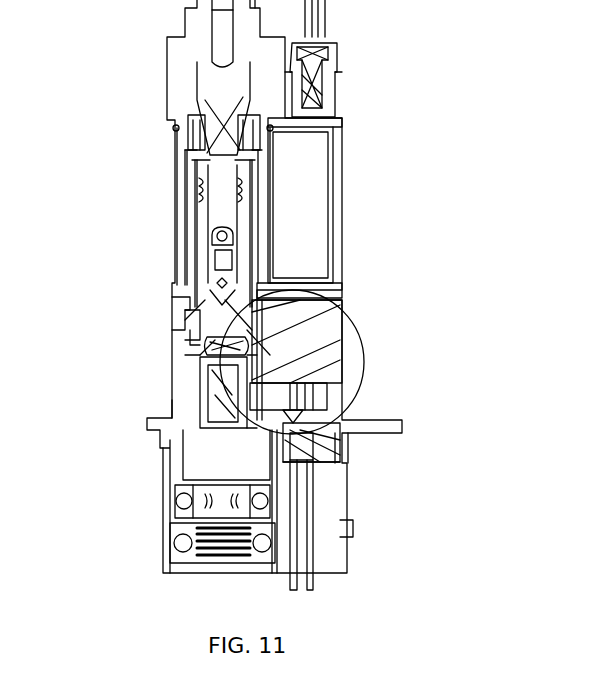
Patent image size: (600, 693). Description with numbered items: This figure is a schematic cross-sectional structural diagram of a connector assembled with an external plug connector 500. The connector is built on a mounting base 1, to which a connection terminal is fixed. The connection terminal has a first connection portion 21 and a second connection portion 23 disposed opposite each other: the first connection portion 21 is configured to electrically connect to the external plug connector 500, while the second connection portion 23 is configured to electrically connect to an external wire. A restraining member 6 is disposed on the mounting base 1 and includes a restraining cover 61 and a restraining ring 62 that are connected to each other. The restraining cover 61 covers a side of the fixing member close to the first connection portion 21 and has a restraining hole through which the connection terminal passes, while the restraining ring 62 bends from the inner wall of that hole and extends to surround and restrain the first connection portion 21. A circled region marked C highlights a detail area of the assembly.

The external plug connector 500 is at (223, 100).
The first connection portion 21 is at (197, 220).
The restraining member 6 is at (77, 252).
The restraining ring 62 is at (180, 283).
The restraining cover 61 is at (177, 330).
The second connection portion 23 is at (197, 403).
The mounting base 1 is at (173, 457).
The detail region C is at (303, 300).